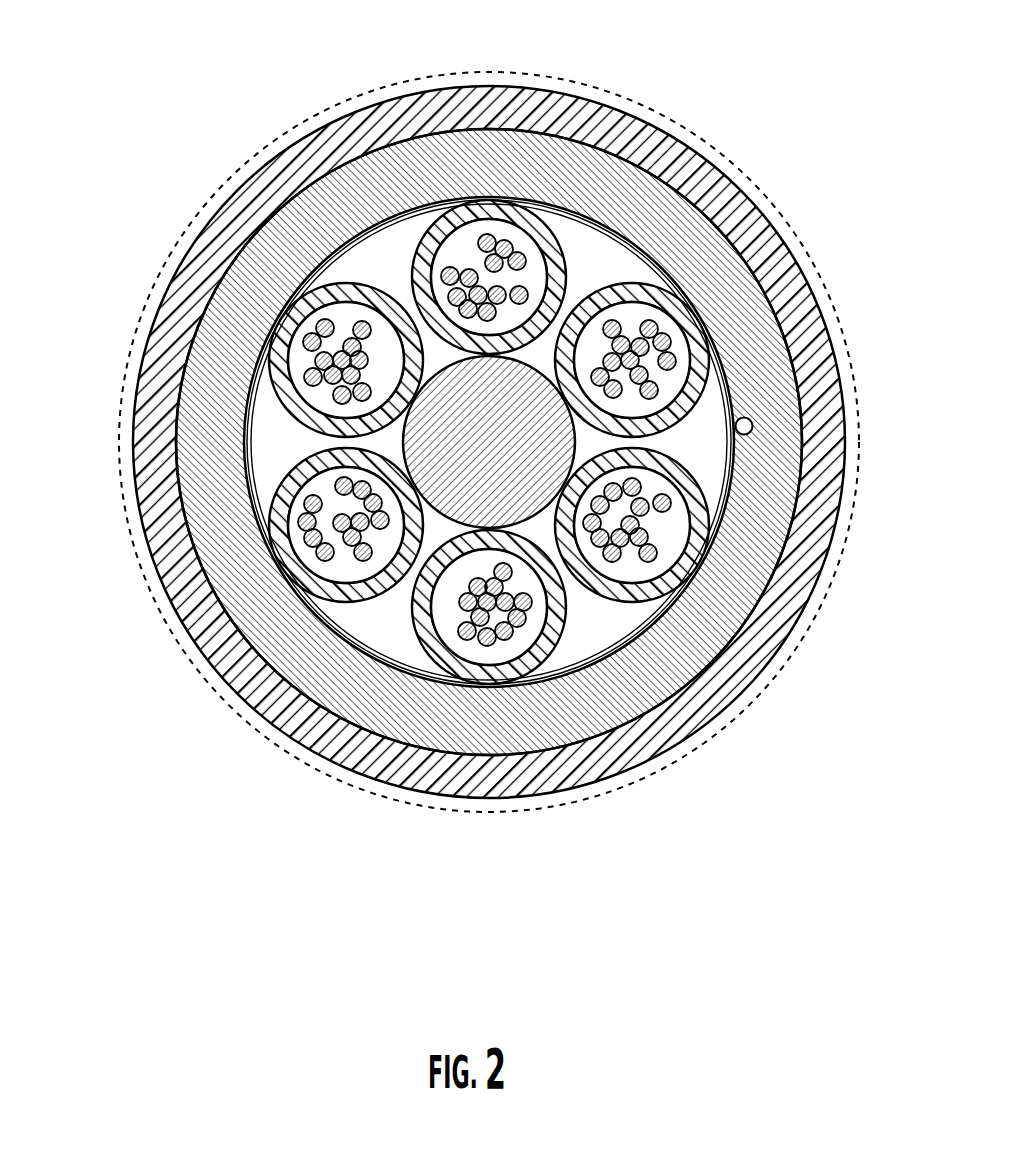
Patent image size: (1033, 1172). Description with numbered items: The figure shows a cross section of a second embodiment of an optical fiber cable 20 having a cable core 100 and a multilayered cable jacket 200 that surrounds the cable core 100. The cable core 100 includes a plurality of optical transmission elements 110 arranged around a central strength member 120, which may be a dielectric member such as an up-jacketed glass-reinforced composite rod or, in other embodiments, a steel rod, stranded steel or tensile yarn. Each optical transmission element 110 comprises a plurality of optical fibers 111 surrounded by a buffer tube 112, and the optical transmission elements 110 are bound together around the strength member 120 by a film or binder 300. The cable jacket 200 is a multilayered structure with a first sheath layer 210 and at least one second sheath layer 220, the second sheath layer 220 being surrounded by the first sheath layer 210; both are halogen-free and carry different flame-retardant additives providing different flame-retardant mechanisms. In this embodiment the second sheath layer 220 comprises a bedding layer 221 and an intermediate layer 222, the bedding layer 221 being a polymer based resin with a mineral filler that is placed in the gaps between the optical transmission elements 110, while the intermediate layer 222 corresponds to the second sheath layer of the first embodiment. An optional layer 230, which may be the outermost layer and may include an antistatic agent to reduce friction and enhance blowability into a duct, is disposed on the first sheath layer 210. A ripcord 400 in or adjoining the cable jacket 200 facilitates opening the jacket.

The optical fiber cable 20 is at (194, 89).
The cable core 100 is at (598, 390).
The optical transmission element 110 is at (708, 413).
The optical fibers 111 is at (670, 337).
The buffer tube 112 is at (707, 357).
The strength member 120 is at (527, 497).
The cable jacket 200 is at (443, 436).
The first sheath layer 210 is at (150, 500).
The second sheath layer 220 is at (447, 436).
The bedding layer 221 is at (489, 436).
The intermediate layer 222 is at (272, 618).
The layer 230 is at (499, 72).
The binder 300 is at (400, 667).
The ripcord 400 is at (753, 428).